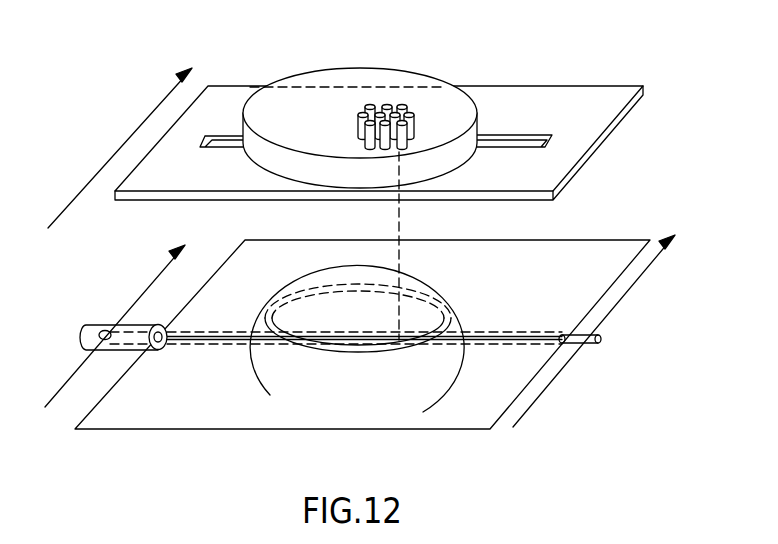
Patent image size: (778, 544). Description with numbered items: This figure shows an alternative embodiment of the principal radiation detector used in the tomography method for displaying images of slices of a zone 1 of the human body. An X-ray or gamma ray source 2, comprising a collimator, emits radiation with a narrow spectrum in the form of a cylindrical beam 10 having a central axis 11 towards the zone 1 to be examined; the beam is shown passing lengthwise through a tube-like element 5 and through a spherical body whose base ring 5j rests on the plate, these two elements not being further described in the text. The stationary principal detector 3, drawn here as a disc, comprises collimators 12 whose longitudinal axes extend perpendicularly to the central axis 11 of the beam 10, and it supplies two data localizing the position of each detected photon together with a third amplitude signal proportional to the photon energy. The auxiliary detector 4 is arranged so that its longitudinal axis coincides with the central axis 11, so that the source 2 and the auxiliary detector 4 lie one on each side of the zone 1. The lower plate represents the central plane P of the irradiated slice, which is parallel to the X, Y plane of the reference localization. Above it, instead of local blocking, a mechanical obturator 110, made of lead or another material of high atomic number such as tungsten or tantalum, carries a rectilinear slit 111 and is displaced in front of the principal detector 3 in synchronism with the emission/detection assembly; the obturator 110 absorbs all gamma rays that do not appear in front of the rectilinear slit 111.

The zone of the human body 1 is at (433, 380).
The X-ray or gamma ray source 2 is at (103, 328).
The stationary principal detector 3 is at (425, 98).
The auxiliary detector 4 is at (568, 332).
The tube 5 is at (88, 328).
The dome base 5j is at (363, 355).
The cylindrical beam 10 is at (208, 343).
The central axis 11 is at (230, 337).
The collimators 12 is at (370, 102).
The mechanical obturator 110 is at (562, 103).
The rectilinear slit 111 is at (533, 139).
The central plane P is at (137, 412).